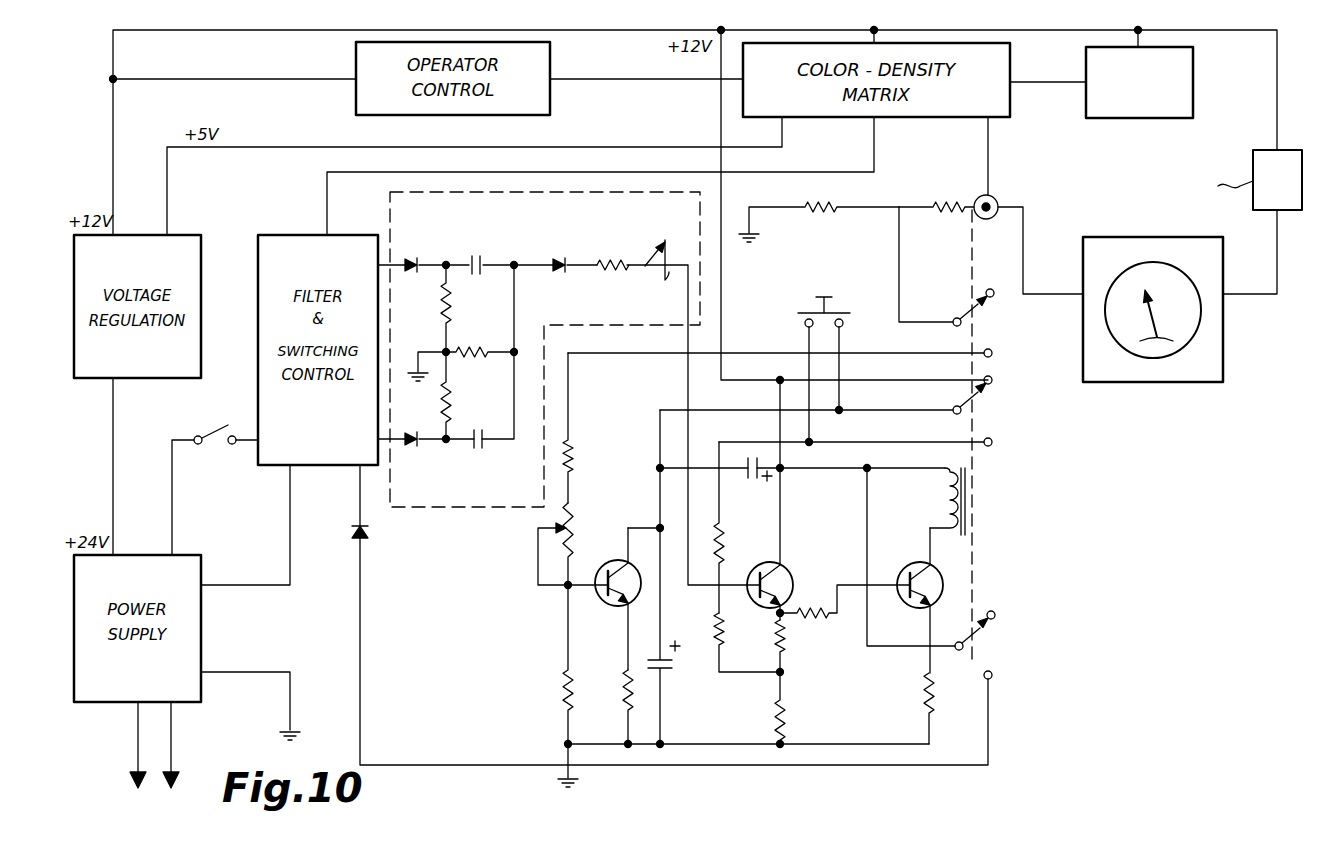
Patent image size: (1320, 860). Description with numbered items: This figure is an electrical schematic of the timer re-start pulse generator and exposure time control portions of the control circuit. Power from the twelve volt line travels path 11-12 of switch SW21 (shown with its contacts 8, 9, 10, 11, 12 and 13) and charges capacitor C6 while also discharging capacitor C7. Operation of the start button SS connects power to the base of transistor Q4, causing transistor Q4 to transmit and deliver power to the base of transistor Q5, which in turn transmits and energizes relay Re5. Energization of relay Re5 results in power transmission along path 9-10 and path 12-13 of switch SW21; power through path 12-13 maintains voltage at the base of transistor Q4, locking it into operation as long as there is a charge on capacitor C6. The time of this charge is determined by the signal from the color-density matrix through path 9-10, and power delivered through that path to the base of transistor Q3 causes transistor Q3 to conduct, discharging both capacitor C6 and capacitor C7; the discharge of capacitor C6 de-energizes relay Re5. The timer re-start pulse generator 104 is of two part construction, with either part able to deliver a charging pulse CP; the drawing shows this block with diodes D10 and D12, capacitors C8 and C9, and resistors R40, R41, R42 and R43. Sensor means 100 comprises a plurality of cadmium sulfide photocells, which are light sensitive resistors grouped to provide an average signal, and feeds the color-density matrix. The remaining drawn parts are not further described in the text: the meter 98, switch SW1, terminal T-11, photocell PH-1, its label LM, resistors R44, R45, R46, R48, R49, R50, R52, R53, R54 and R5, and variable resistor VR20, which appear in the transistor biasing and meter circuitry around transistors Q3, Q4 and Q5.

The sensor means 100 is at (1139, 82).
The meter 98 is at (1158, 384).
The timer re-start pulse generator 104 is at (432, 509).
The switch contact 8 is at (998, 290).
The switch path contact 9 is at (962, 320).
The switch path contact 10 is at (793, 351).
The switch SW-21 path contact 11 is at (1001, 377).
The switch SW-21 path contact 12 is at (823, 398).
The switch SW-21 path contact 13 is at (869, 440).
The switch SW1 is at (215, 481).
The switch SW-21 SW21 is at (825, 444).
The test point terminal T-11 is at (990, 202).
The photocell PH-1 is at (1277, 180).
The light meter LM is at (1219, 186).
The start button SS is at (833, 305).
The relay RE-5 Re5 is at (973, 501).
The charging pulse CP is at (648, 244).
The diode D10 is at (416, 248).
The diode D12 is at (564, 248).
The capacitor C8 is at (477, 238).
The capacitor C9 is at (475, 465).
The capacitor C7 is at (750, 481).
The capacitor C6 is at (680, 577).
The resistor R40 is at (423, 308).
The resistor R41 is at (466, 352).
The resistor R42 is at (469, 395).
The resistor R43 is at (615, 288).
The resistor R44 is at (546, 664).
The resistor R45 is at (606, 707).
The resistor R46 is at (799, 708).
The resistor R48 is at (906, 708).
The resistor R49 is at (842, 628).
The resistor R50 is at (728, 642).
The resistor R52 is at (936, 226).
The resistor R53 is at (824, 226).
The resistor R54 is at (586, 428).
The resistor R5 is at (742, 527).
The variable resistor VR20 is at (578, 544).
The transistor Q3 is at (616, 599).
The transistor Q4 is at (781, 501).
The transistor Q5 is at (914, 600).